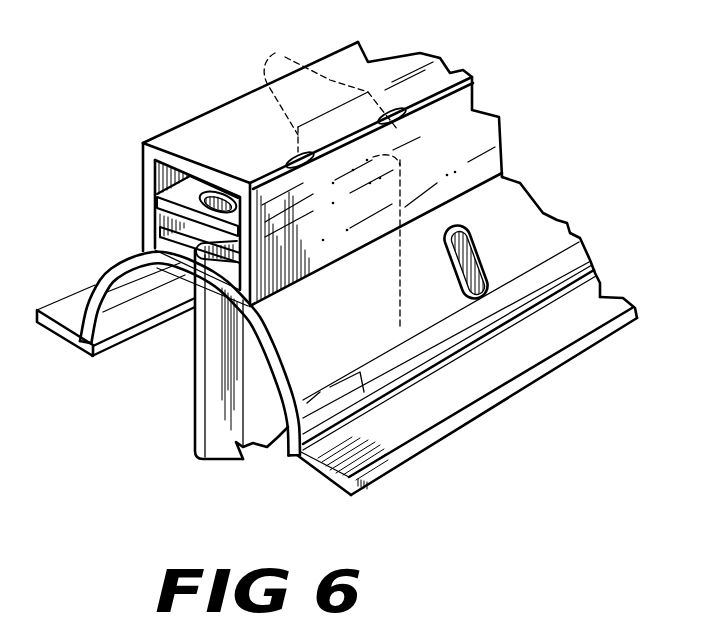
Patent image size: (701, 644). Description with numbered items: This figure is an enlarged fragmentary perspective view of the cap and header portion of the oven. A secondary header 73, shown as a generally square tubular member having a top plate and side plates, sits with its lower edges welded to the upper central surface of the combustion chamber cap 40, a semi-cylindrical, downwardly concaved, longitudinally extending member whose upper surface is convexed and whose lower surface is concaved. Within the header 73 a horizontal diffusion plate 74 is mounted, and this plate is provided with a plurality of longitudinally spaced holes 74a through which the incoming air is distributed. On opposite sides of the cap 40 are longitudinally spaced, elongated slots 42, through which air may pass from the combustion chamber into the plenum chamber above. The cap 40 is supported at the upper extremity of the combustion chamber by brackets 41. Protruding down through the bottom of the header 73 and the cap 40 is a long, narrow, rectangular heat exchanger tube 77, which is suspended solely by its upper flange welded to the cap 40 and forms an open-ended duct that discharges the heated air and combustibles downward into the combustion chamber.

The secondary header 73 is at (238, 122).
The diffusion plate 74 is at (177, 202).
The holes 74a is at (290, 50).
The combustion chamber cap 40 is at (540, 232).
The brackets 41 is at (583, 307).
The slots 42 is at (480, 240).
The heat exchanger tubes 77 is at (203, 384).